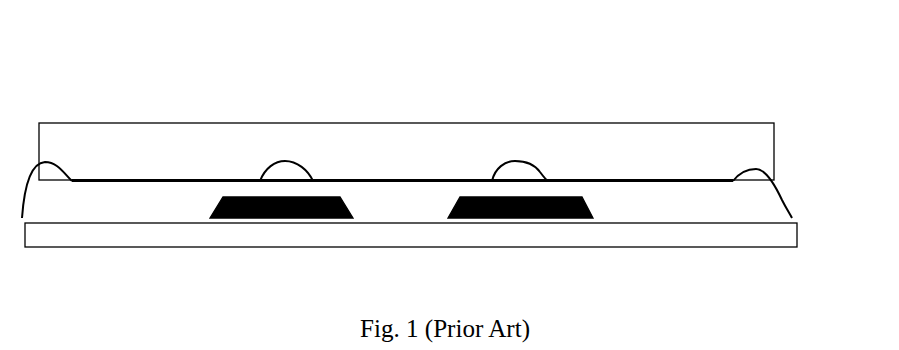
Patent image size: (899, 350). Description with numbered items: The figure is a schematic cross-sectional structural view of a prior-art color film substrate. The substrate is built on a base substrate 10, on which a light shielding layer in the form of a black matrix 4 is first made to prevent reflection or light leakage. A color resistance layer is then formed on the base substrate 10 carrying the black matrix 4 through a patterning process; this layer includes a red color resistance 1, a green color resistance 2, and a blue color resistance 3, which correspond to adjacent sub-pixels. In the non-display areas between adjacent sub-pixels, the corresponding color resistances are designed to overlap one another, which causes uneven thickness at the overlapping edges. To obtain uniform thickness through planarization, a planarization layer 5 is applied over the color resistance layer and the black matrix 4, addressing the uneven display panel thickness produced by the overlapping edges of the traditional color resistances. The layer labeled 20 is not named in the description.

The red color resistance 1 is at (162, 207).
The green color resistance 2 is at (407, 207).
The blue color resistance 3 is at (646, 207).
The black matrix 4 is at (288, 200).
The planarization layer 5 is at (704, 147).
The base substrate 10 is at (715, 235).
The display layer 20 is at (715, 199).